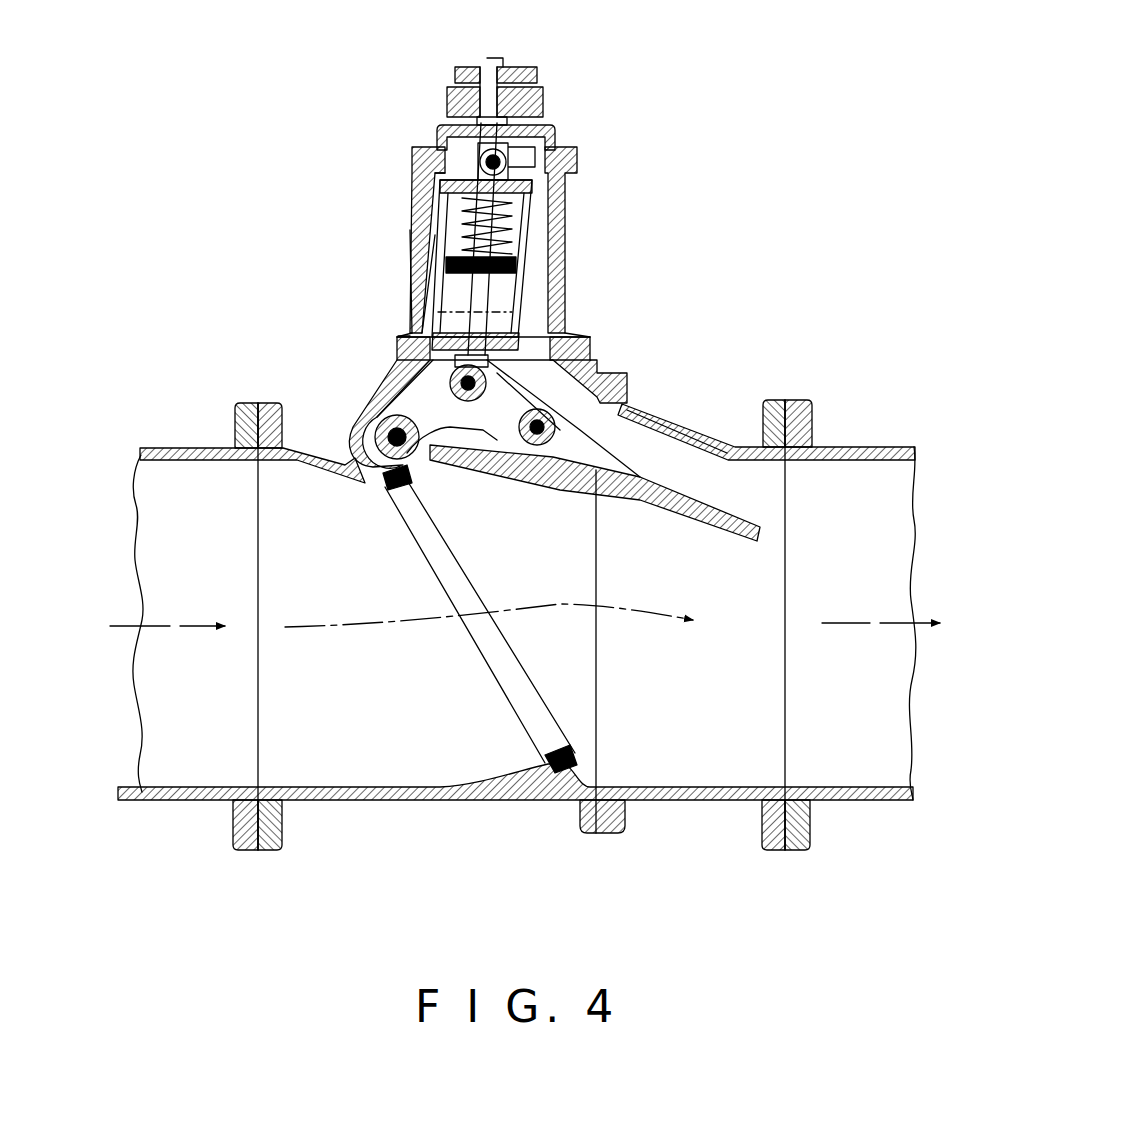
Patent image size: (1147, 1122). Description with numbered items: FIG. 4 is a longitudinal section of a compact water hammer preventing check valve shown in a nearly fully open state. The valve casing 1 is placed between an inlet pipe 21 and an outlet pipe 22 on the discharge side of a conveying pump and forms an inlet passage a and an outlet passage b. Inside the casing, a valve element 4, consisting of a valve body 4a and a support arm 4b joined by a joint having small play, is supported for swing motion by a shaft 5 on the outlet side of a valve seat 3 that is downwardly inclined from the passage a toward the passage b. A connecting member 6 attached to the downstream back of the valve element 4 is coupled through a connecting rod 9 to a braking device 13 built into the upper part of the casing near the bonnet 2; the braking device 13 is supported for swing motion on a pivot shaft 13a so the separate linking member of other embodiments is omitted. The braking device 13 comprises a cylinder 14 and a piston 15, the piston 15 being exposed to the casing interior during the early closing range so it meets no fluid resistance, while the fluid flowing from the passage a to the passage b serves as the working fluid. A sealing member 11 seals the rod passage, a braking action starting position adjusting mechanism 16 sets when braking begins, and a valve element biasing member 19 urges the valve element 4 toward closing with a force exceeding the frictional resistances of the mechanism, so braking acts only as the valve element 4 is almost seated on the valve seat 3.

The valve casing 1 is at (393, 390).
The bonnet 2 is at (410, 268).
The valve seat 3 is at (557, 787).
The valve element 4 is at (607, 427).
The valve body 4a is at (690, 400).
The support arm 4b is at (605, 402).
The shaft 5 is at (373, 417).
The connecting member 6 is at (572, 340).
The connecting rod 9 is at (523, 287).
The sealing member 11 is at (408, 315).
The braking device 13 is at (437, 257).
The pivot shaft 13a is at (482, 157).
The cylinder 14 is at (483, 303).
The piston 15 is at (520, 240).
The braking action starting position adjusting mechanism 16 is at (513, 63).
The valve element biasing member 19 is at (560, 183).
The inlet pipe 21 is at (210, 792).
The outlet pipe 22 is at (833, 795).
The inlet passage a is at (305, 606).
The outlet passage b is at (755, 625).